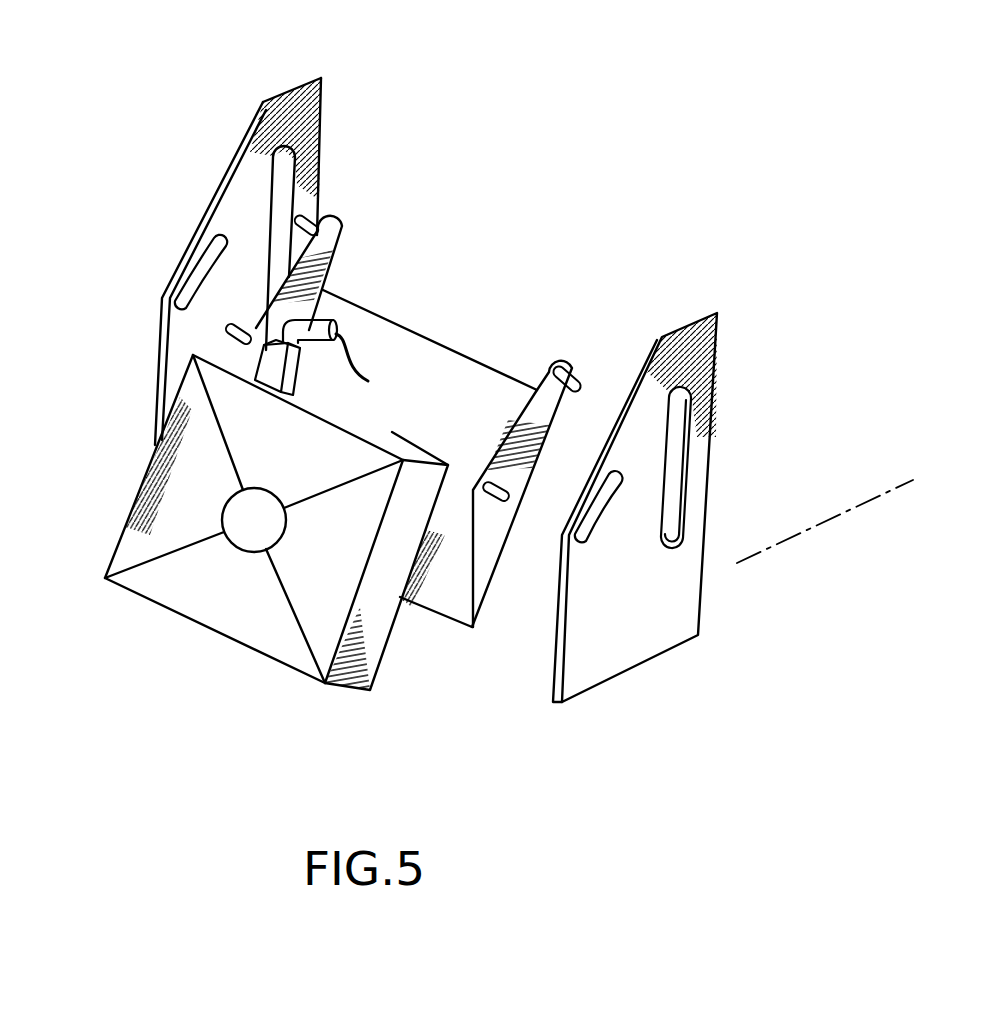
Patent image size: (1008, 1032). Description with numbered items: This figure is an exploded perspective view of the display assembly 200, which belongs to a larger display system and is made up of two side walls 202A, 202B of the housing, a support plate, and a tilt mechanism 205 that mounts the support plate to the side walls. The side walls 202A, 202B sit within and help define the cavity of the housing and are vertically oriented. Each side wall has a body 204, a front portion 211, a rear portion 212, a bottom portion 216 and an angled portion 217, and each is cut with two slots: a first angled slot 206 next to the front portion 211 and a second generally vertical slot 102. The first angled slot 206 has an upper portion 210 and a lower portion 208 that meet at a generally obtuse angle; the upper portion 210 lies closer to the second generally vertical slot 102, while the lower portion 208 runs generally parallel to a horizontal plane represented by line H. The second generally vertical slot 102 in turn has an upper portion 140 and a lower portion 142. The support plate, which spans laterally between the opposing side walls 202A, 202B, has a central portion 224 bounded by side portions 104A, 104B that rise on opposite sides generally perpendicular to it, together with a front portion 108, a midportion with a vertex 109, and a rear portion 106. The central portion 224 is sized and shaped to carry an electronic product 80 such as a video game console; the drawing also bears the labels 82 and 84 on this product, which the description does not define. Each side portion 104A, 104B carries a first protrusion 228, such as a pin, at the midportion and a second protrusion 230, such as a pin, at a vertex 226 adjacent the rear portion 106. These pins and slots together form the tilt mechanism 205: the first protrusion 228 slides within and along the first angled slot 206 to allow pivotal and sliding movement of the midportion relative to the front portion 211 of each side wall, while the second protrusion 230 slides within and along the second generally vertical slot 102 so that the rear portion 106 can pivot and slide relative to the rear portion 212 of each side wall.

The electronic product 80 is at (228, 613).
The housing 82 is at (253, 632).
The housing cover 84 is at (301, 462).
The second generally vertical slot 102 is at (312, 187).
The side portion 104A is at (492, 540).
The side portion 104B is at (323, 290).
The rear portion 106 is at (478, 362).
The front portion 108 is at (405, 597).
The vertex 109 is at (495, 468).
The upper portion 140 is at (318, 160).
The lower portion 142 is at (687, 547).
The display assembly 200 is at (714, 300).
The side wall 202A is at (700, 587).
The side wall 202B is at (322, 118).
The body 204 is at (240, 207).
The tilt mechanism 205 is at (150, 292).
The first angled slot 206 is at (186, 250).
The lower portion 208 is at (163, 322).
The upper portion 210 is at (284, 92).
The front portion 211 is at (153, 393).
The rear portion 212 is at (322, 140).
The bottom portion 216 is at (623, 673).
The angled portion 217 is at (193, 240).
The central portion 224 is at (435, 373).
The vertex 226 is at (562, 368).
The first protrusion 228 is at (228, 331).
The second protrusion 230 is at (314, 227).
The line H is at (828, 521).